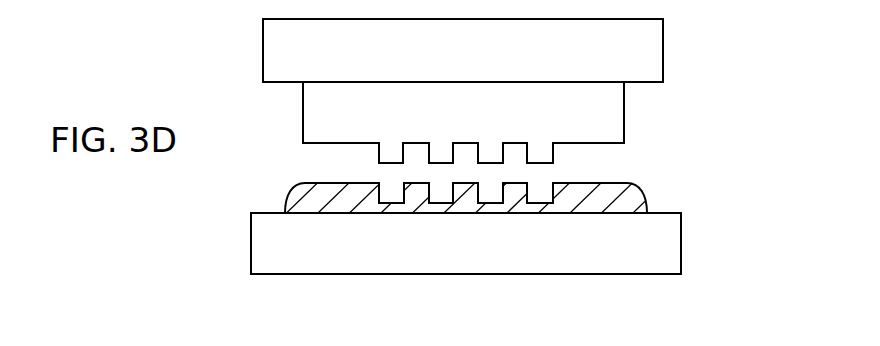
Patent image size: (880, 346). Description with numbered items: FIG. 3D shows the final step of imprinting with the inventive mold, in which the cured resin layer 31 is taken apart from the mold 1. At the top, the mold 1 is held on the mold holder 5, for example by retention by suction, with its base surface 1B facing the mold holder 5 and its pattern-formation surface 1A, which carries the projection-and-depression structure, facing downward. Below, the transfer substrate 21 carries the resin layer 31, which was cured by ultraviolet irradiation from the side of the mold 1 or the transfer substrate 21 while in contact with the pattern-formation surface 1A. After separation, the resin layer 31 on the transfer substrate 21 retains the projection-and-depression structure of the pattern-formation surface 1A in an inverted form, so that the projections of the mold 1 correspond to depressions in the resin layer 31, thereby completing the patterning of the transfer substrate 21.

The mold holder 5 is at (643, 52).
The mold 1 is at (610, 117).
The pattern-formation surface 1A is at (578, 148).
The base surface 1B is at (327, 85).
The resin layer 31 is at (318, 201).
The transfer substrate 21 is at (658, 242).